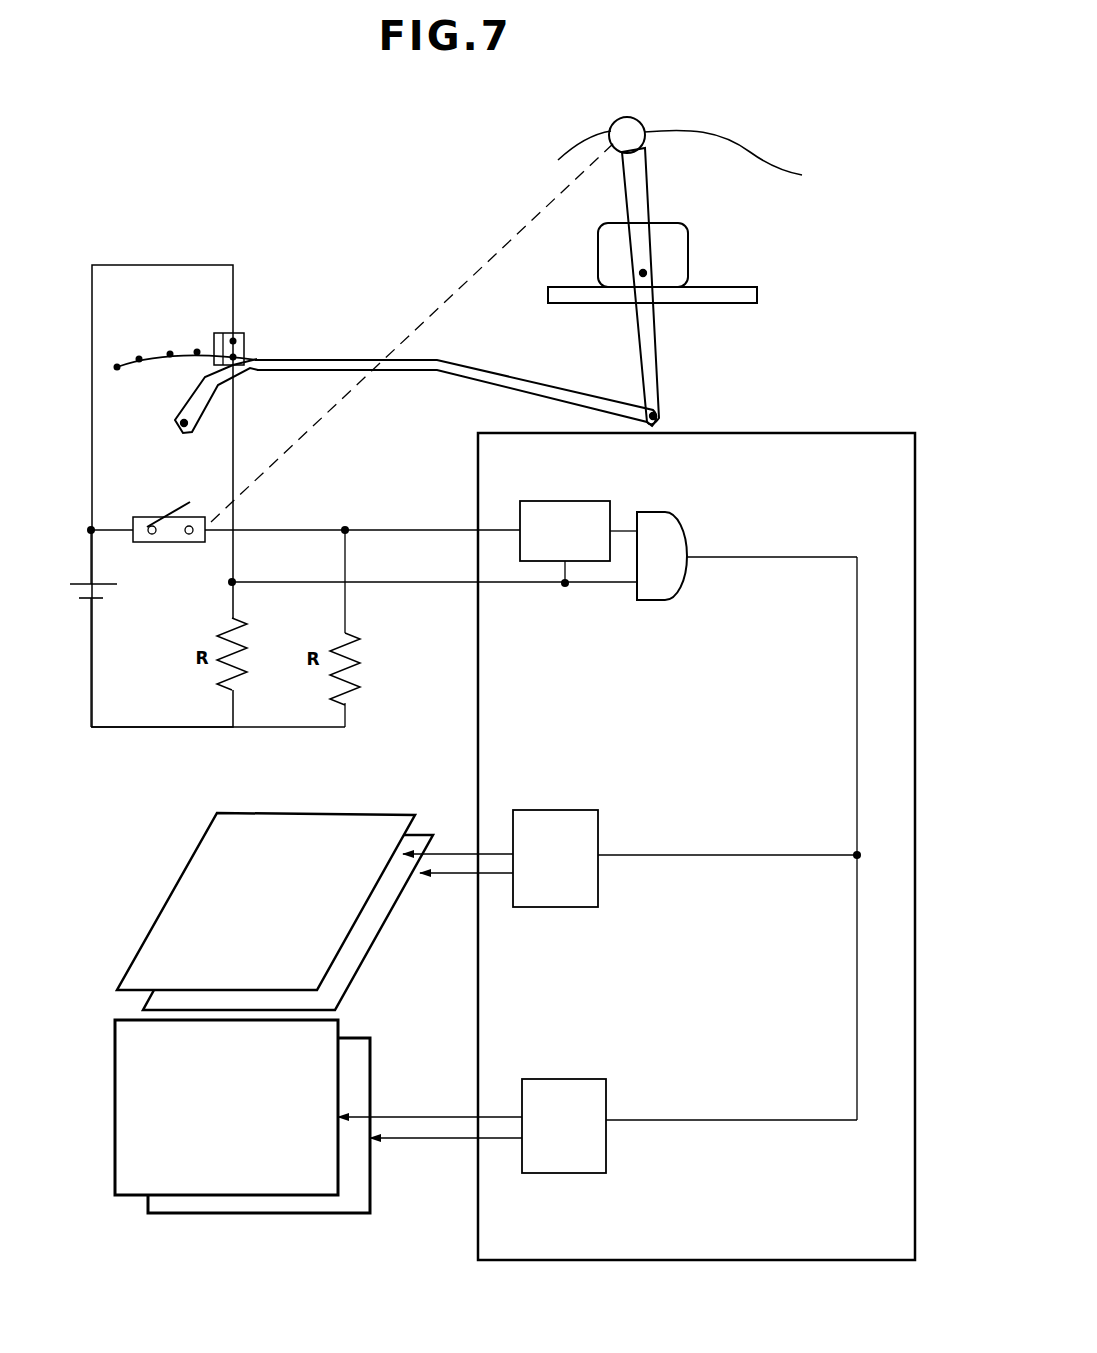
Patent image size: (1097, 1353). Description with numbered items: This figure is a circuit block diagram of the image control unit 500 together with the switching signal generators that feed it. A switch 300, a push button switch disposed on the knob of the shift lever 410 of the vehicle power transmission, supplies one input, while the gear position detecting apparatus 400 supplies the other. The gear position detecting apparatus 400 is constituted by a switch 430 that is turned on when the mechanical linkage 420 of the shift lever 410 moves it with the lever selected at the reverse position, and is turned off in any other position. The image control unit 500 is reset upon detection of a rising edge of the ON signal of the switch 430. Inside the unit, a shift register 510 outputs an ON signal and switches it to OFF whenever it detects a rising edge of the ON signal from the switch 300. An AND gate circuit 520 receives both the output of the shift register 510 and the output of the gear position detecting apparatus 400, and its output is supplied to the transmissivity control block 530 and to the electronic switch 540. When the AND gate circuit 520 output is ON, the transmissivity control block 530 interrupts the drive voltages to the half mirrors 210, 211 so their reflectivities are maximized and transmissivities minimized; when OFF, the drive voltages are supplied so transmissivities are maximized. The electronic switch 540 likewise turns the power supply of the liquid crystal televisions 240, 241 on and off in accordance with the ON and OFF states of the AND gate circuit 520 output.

The half mirror 210 is at (248, 828).
The half mirror 211 is at (357, 953).
The liquid crystal television 240 is at (213, 1187).
The liquid crystal television 241 is at (298, 1208).
The switch 300 is at (177, 513).
The gear position detecting apparatus 400 is at (196, 240).
The shift lever 410 is at (628, 181).
The mechanical linkage 420 is at (527, 380).
The switch 430 is at (247, 340).
The image control unit 500 is at (727, 1248).
The shift register 510 is at (577, 500).
The AND gate circuit 520 is at (747, 816).
The transmissivity control block 530 is at (572, 810).
The electronic switch 540 is at (573, 1078).